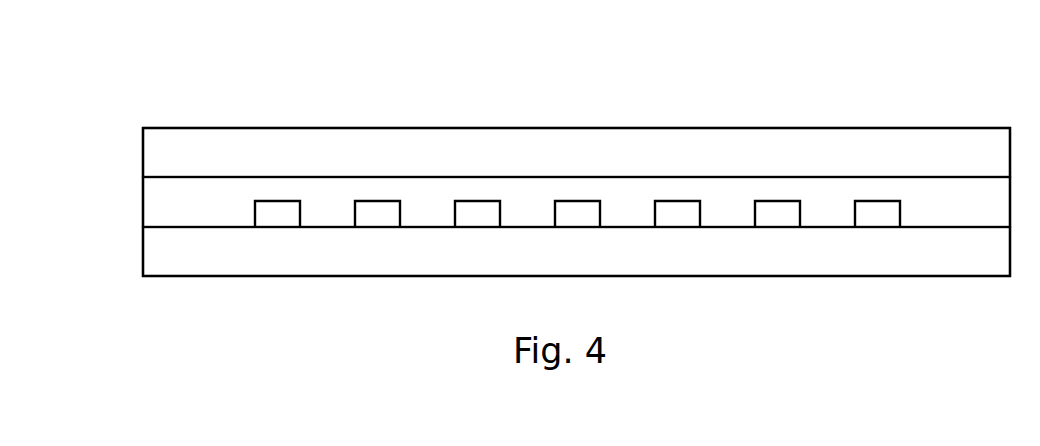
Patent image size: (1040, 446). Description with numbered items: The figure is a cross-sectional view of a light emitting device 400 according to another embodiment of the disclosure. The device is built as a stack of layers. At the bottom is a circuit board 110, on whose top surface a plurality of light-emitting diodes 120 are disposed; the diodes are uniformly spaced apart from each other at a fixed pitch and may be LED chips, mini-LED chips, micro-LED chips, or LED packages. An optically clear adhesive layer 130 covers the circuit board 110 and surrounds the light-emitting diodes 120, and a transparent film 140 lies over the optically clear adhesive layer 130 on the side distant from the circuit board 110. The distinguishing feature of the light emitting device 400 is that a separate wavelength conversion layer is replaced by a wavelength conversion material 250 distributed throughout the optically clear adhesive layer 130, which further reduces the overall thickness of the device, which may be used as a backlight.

The light emitting device 400 is at (78, 17).
The transparent film 140 is at (153, 151).
The optically clear adhesive layer 130 is at (153, 201).
The circuit board 110 is at (153, 251).
The light-emitting diodes 120 is at (275, 218).
The wavelength conversion material 250 is at (368, 188).